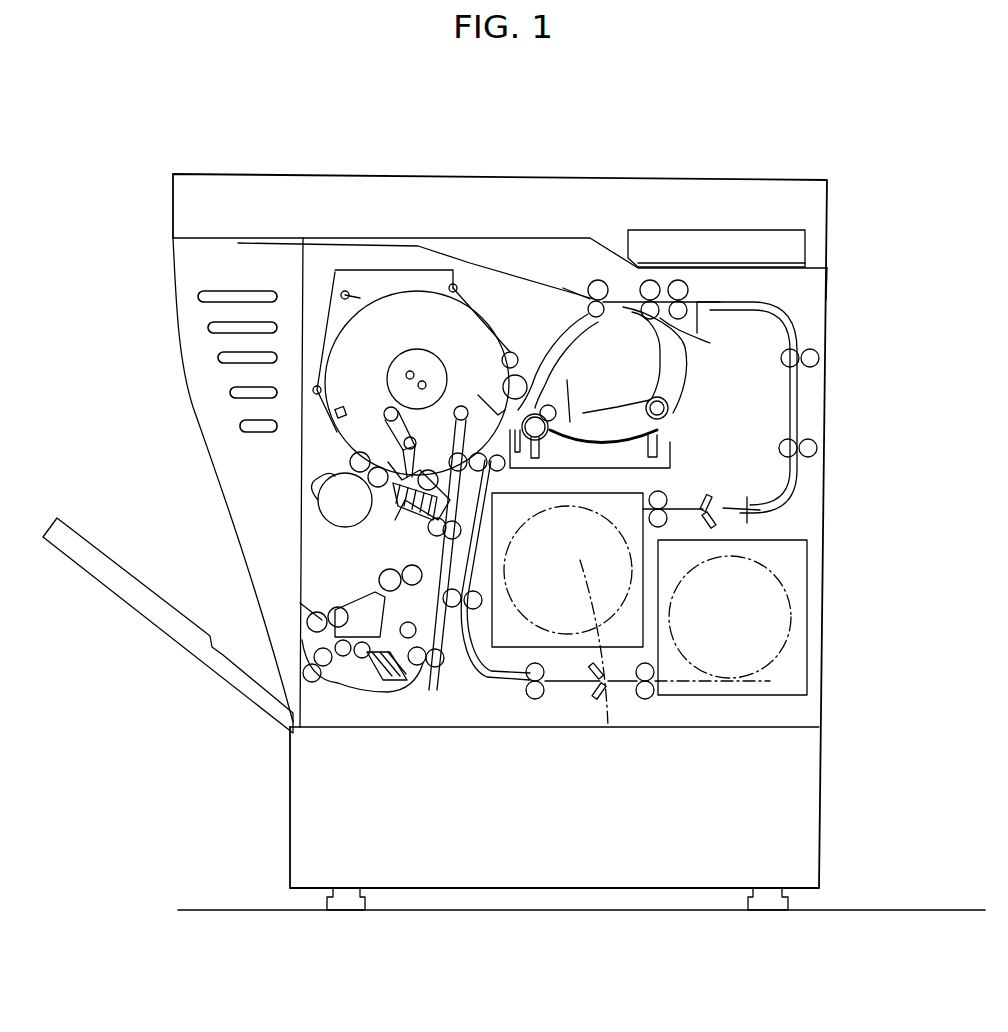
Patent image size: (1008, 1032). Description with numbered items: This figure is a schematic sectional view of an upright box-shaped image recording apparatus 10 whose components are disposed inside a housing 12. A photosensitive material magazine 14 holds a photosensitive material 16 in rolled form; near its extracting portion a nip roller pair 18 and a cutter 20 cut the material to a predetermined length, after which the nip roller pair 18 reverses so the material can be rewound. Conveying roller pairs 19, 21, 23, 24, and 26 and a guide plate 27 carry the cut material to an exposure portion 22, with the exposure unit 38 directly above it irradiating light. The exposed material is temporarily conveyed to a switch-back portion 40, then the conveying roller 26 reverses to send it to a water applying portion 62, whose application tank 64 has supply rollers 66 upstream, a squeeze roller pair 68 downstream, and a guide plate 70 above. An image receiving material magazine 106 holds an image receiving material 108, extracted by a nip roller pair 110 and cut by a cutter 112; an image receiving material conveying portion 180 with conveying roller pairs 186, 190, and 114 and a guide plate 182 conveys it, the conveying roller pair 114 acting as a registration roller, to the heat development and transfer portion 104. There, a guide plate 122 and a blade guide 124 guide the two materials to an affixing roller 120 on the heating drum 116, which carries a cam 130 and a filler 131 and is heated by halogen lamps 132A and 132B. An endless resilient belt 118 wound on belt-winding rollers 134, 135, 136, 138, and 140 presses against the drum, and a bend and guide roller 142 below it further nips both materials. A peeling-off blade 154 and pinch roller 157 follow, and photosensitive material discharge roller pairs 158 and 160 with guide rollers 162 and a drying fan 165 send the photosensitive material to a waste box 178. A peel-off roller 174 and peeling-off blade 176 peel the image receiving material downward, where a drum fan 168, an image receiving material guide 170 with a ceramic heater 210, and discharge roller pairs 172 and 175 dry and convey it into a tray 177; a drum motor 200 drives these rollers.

The image recording apparatus 10 is at (143, 196).
The housing 12 is at (832, 300).
The photosensitive material magazine 14 is at (482, 695).
The photosensitive material 16 is at (608, 740).
The nip roller pair 18 is at (666, 496).
The conveying roller pair 19 is at (779, 448).
The cutter 20 is at (712, 498).
The conveying roller pair 21 is at (780, 360).
The exposure portion 22 is at (668, 280).
The conveying roller pair 23 is at (710, 343).
The conveying roller pair 24 is at (678, 380).
The conveying roller pair 26 is at (640, 280).
The guide plate 27 is at (805, 408).
The exposure unit 38 is at (725, 227).
The switch-back portion 40 is at (492, 258).
The water applying portion 62 is at (593, 406).
The application tank 64 is at (582, 470).
The supply rollers 66 is at (655, 396).
The squeeze roller pair 68 is at (557, 403).
The guide plate 70 is at (616, 410).
The heat development and transfer portion 104 is at (303, 356).
The image receiving material magazine 106 is at (807, 565).
The image receiving material 108 is at (790, 628).
The nip roller pair 110 is at (652, 700).
The cutter 112 is at (590, 695).
The conveying roller pair 114 is at (500, 470).
The heating drum 116 is at (358, 275).
The endless resilient belt 118 is at (390, 282).
The affixing roller 120 is at (586, 291).
The guide plate 122 is at (592, 318).
The blade guide 124 is at (476, 400).
The cam 130 is at (455, 410).
The filler 131 is at (343, 406).
The halogen lamp 132A is at (410, 371).
The halogen lamp 132B is at (423, 381).
The belt-winding roller 134 is at (510, 352).
The belt-winding roller 135 is at (462, 282).
The belt-winding roller 136 is at (343, 290).
The belt-winding roller 138 is at (315, 392).
The belt-winding roller 140 is at (348, 460).
The bend and guide roller 142 is at (366, 478).
The peeling-off blade 154 is at (360, 548).
The pinch roller 157 is at (383, 455).
The photosensitive material discharge roller pair 158 is at (378, 580).
The photosensitive material discharge roller pair 160 is at (310, 615).
The guide rollers 162 is at (342, 700).
The drying fan 165 is at (375, 690).
The drum fan 168 is at (405, 545).
The image receiving material guide 170 is at (453, 557).
The image receiving material discharge roller pair 172 is at (433, 515).
The peel-off roller 174 is at (440, 497).
The peeling-off blade 176 is at (447, 473).
The image receiving material discharge roller pair 175 is at (308, 690).
The tray 177 is at (148, 590).
The waste box 178 is at (212, 432).
The image receiving material conveying portion 180 is at (468, 672).
The guide plate 182 is at (487, 690).
The conveying roller pair 186 is at (480, 690).
The conveying roller pair 190 is at (537, 700).
The drum motor 200 is at (322, 512).
The ceramic heater 210 is at (398, 595).